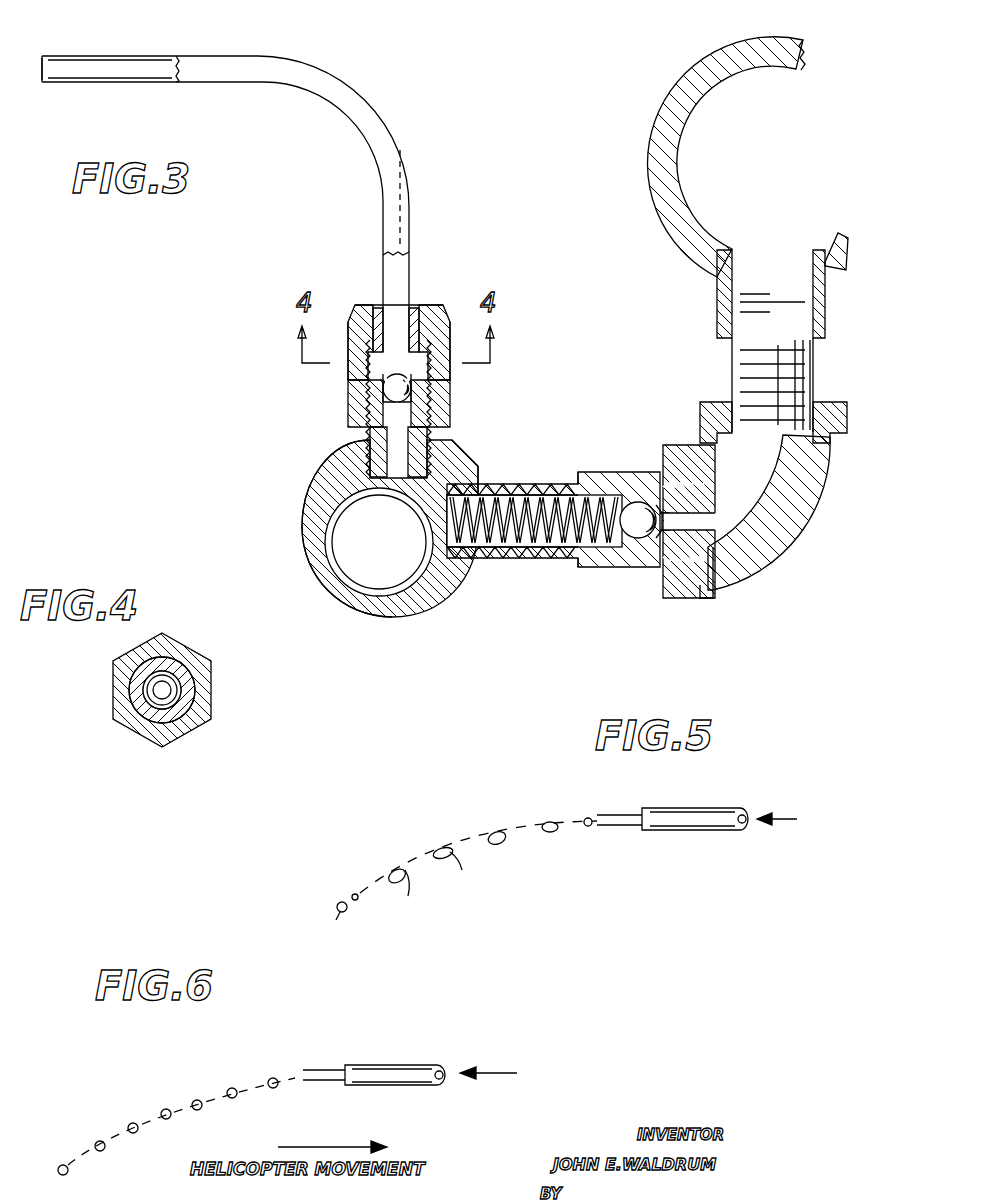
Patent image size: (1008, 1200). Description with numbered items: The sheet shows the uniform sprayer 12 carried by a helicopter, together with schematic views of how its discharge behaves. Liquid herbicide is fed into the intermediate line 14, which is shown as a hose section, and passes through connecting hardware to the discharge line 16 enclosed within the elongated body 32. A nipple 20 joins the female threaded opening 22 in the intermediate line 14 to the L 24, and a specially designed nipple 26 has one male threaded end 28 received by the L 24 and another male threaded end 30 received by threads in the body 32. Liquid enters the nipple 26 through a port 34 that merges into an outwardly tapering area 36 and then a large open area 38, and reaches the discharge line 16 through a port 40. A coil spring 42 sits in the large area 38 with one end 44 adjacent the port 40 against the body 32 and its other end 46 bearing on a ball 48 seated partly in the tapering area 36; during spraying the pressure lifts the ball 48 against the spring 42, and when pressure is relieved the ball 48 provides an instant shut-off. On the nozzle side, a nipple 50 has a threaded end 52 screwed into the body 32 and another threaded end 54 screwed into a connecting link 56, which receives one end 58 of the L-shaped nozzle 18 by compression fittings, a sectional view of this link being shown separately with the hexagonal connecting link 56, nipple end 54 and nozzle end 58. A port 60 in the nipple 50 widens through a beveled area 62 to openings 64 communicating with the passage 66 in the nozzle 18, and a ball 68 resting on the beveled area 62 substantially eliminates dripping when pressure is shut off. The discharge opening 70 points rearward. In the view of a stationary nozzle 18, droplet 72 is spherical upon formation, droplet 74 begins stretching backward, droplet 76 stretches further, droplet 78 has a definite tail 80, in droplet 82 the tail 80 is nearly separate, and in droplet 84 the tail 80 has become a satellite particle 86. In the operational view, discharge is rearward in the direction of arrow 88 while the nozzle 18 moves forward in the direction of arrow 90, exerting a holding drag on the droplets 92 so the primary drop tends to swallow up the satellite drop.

In FIG. 3, the uniform sprayer 12 is at (424, 118).
In FIG. 3, the intermediate line 14 is at (695, 62).
In FIG. 3, the discharge line 16 is at (350, 600).
In FIG. 3, the discharge nozzle 18 is at (228, 56).
In FIG. 5, the discharge nozzle 18 is at (724, 830).
In FIG. 6, the discharge nozzle 18 is at (372, 1066).
In FIG. 3, the nipple 20 is at (735, 356).
In FIG. 3, the female threaded opening 22 is at (725, 299).
In FIG. 3, the L 24 is at (765, 545).
In FIG. 3, the nipple 26 is at (592, 563).
In FIG. 3, the male threaded end 28 is at (712, 578).
In FIG. 3, the male threaded end 30 is at (495, 558).
In FIG. 3, the elongated body 32 is at (398, 610).
In FIG. 3, the port 34 is at (700, 520).
In FIG. 3, the outwardly tapering area 36 is at (662, 560).
In FIG. 3, the large open area 38 is at (548, 492).
In FIG. 3, the port 40 is at (440, 518).
In FIG. 3, the spring 42 is at (510, 490).
In FIG. 3, the end of spring 44 is at (450, 575).
In FIG. 3, the other end of spring 46 is at (628, 505).
In FIG. 3, the ball 48 is at (630, 538).
In FIG. 3, the nipple 50 is at (352, 416).
In FIG. 3, the threaded end 52 is at (368, 462).
In FIG. 3, the other threaded end 54 is at (430, 322).
In FIG. 4, the other threaded end 54 is at (190, 680).
In FIG. 3, the connecting link 56 is at (360, 380).
In FIG. 4, the connecting link 56 is at (204, 700).
In FIG. 3, the end of nozzle 58 is at (412, 292).
In FIG. 4, the end of nozzle 58 is at (168, 680).
In FIG. 3, the port 60 is at (410, 440).
In FIG. 3, the beveled area 62 is at (418, 390).
In FIG. 3, the openings 64 is at (373, 362).
In FIG. 3, the passage 66 is at (386, 275).
In FIG. 3, the ball 68 is at (375, 420).
In FIG. 3, the discharge opening 70 is at (42, 66).
In FIG. 5, the droplet 72 is at (588, 815).
In FIG. 5, the droplet 74 is at (546, 822).
In FIG. 5, the droplet 76 is at (494, 845).
In FIG. 5, the droplet 78 is at (440, 852).
In FIG. 5, the tail 80 is at (437, 889).
In FIG. 5, the droplet 82 is at (390, 875).
In FIG. 5, the droplet 84 is at (328, 923).
In FIG. 5, the satellite particle 86 is at (350, 896).
In FIG. 6, the arrow 88 is at (490, 1072).
In FIG. 6, the arrow 90 is at (305, 1147).
In FIG. 6, the droplets 92 is at (134, 1123).